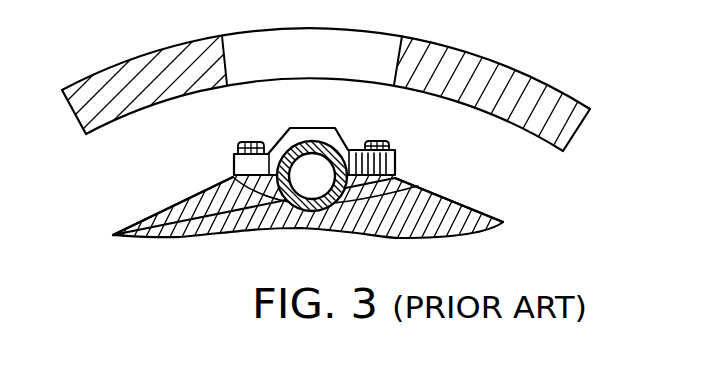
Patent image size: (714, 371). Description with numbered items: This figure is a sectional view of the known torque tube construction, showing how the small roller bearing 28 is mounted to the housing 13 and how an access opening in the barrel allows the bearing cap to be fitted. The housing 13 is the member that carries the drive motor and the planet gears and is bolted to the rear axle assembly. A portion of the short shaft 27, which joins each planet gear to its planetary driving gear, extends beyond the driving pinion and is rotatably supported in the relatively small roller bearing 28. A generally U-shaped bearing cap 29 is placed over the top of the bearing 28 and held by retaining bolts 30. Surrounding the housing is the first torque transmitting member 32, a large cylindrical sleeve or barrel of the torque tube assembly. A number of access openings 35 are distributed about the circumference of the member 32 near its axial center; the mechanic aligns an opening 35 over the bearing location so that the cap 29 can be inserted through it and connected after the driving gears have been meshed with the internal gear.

The housing 13 is at (472, 227).
The short shaft 27 is at (231, 182).
The roller bearing 28 is at (420, 186).
The bearing cap 29 is at (306, 133).
The retaining bolts 30 is at (397, 133).
The first torque transmitting member 32 is at (487, 72).
The access openings 35 is at (384, 50).